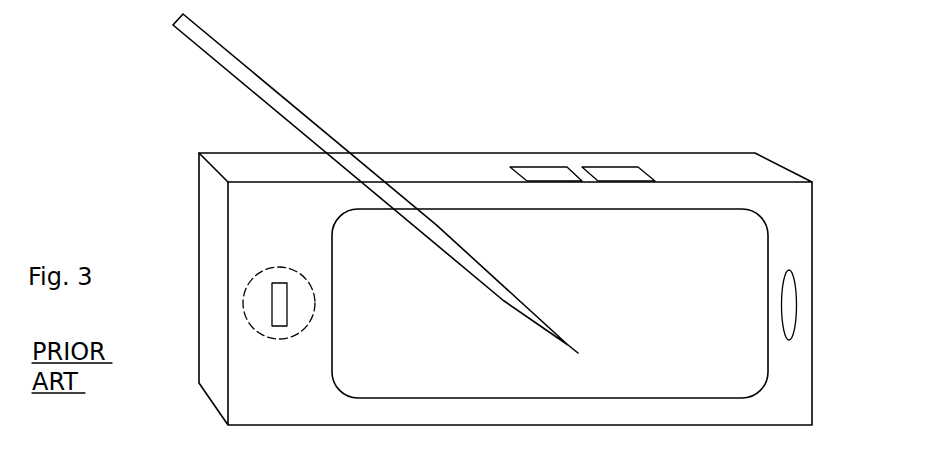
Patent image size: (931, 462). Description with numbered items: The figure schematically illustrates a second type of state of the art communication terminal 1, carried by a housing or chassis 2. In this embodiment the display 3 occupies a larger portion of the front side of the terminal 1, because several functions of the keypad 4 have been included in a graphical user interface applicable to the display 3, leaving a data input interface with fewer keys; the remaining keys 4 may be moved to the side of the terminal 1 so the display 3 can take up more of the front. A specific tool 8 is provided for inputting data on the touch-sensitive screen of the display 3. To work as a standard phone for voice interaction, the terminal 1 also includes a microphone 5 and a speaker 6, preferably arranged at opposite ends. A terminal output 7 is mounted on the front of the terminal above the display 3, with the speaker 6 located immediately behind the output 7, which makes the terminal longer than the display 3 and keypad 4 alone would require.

The communication terminal 1 is at (168, 218).
The housing 2 is at (410, 152).
The display 3 is at (622, 305).
The keypad 4 is at (582, 140).
The microphone 5 is at (787, 295).
The speaker 6 is at (270, 268).
The terminal output 7 is at (277, 327).
The tool 8 is at (188, 37).